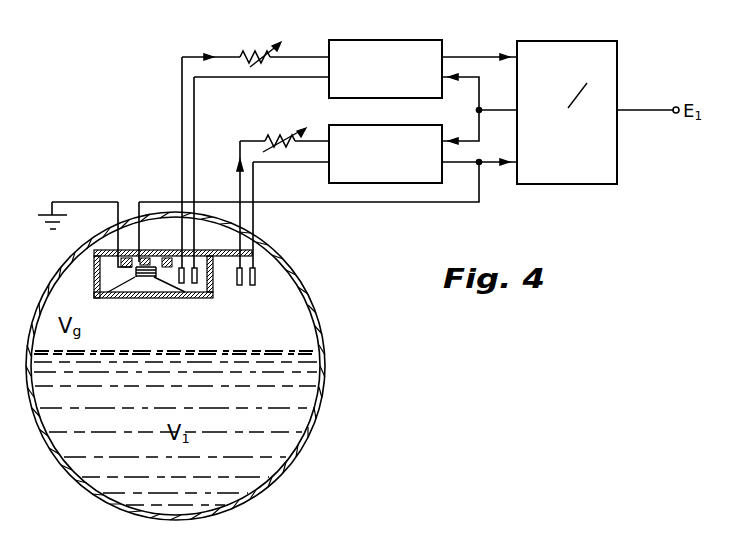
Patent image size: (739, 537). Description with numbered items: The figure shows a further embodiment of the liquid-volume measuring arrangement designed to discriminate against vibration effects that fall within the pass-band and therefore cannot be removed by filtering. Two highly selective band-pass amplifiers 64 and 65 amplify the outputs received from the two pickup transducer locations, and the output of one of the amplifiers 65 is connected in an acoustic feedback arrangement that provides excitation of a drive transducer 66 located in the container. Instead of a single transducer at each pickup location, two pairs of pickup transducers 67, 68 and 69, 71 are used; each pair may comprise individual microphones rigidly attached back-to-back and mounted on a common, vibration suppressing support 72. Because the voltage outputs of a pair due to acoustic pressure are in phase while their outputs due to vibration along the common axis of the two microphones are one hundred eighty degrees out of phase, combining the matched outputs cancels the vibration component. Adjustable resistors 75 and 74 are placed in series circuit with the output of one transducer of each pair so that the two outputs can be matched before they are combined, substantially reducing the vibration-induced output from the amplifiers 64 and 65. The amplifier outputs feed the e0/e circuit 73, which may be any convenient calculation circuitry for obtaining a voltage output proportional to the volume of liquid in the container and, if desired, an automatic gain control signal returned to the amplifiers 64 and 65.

The band-pass amplifier 64 is at (428, 41).
The band-pass amplifier 65 is at (413, 126).
The drive transducer 66 is at (129, 279).
The pickup transducer 67 is at (182, 286).
The pickup transducer 68 is at (195, 286).
The pickup transducer 69 is at (238, 287).
The pickup transducer 71 is at (253, 286).
The vibration suppressing support 72 is at (198, 252).
The e0/e circuit 73 is at (597, 41).
The adjustable resistor 74 is at (288, 128).
The adjustable resistor 75 is at (252, 48).